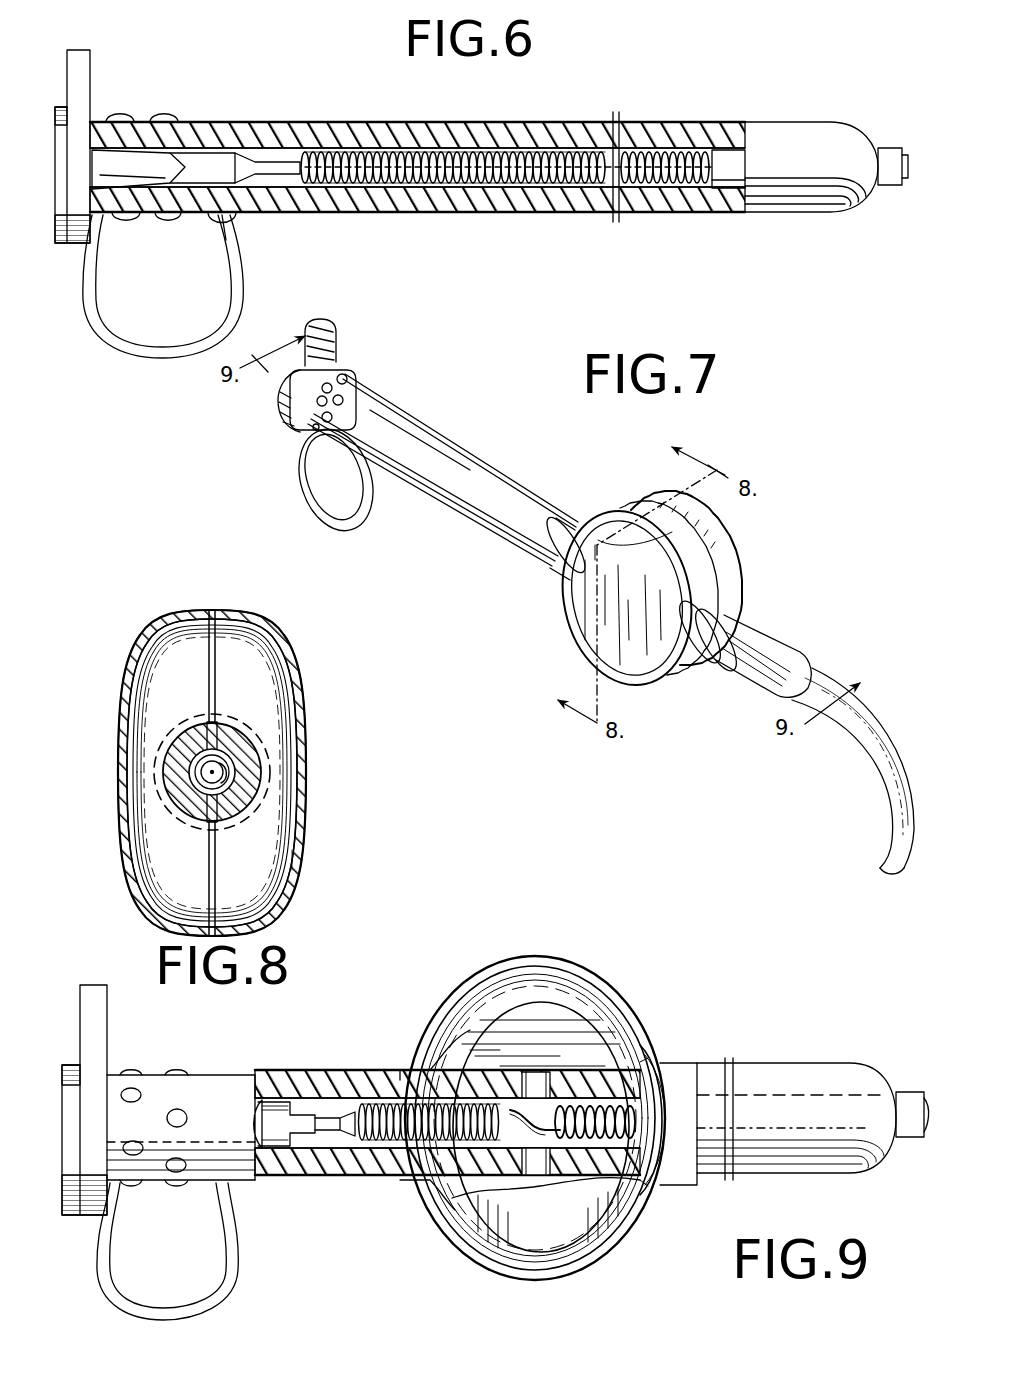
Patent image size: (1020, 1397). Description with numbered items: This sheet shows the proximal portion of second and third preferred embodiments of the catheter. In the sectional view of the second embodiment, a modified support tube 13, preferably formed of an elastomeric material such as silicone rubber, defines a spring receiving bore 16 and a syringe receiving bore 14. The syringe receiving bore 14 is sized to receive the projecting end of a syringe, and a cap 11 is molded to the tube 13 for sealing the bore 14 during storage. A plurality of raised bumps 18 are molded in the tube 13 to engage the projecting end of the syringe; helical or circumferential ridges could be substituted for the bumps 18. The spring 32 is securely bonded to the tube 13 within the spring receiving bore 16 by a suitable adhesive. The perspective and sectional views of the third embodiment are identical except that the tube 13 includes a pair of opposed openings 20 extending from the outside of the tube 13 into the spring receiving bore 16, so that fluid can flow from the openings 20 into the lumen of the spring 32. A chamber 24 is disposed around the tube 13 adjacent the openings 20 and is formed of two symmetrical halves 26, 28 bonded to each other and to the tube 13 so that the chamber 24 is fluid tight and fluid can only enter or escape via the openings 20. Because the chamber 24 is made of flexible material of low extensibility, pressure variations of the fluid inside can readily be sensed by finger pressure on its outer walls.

In FIG. 6, the cap 11 is at (62, 245).
In FIG. 7, the cap 11 is at (290, 405).
In FIG. 9, the cap 11 is at (62, 1097).
In FIG. 6, the support tube 13 is at (458, 205).
In FIG. 7, the support tube 13 is at (455, 475).
In FIG. 8, the support tube 13 is at (262, 795).
In FIG. 9, the support tube 13 is at (308, 1075).
In FIG. 6, the syringe receiving bore 14 is at (208, 160).
In FIG. 6, the spring receiving bore 16 is at (398, 160).
In FIG. 8, the spring receiving bore 16 is at (236, 776).
In FIG. 9, the spring receiving bore 16 is at (644, 1060).
In FIG. 6, the raised bumps 18 is at (164, 115).
In FIG. 7, the raised bumps 18 is at (360, 398).
In FIG. 9, the raised bumps 18 is at (175, 1075).
In FIG. 8, the openings 20 is at (252, 742).
In FIG. 9, the openings 20 is at (540, 1075).
In FIG. 7, the chamber 24 is at (760, 583).
In FIG. 8, the chamber 24 is at (305, 660).
In FIG. 9, the chamber 24 is at (532, 1118).
In FIG. 7, the first symmetrical half 26 is at (580, 608).
In FIG. 8, the first symmetrical half 26 is at (128, 680).
In FIG. 7, the second symmetrical half 28 is at (720, 540).
In FIG. 8, the second symmetrical half 28 is at (298, 857).
In FIG. 6, the spring 32 is at (445, 160).
In FIG. 7, the spring 32 is at (880, 866).
In FIG. 8, the spring 32 is at (168, 772).
In FIG. 9, the spring 32 is at (470, 1075).